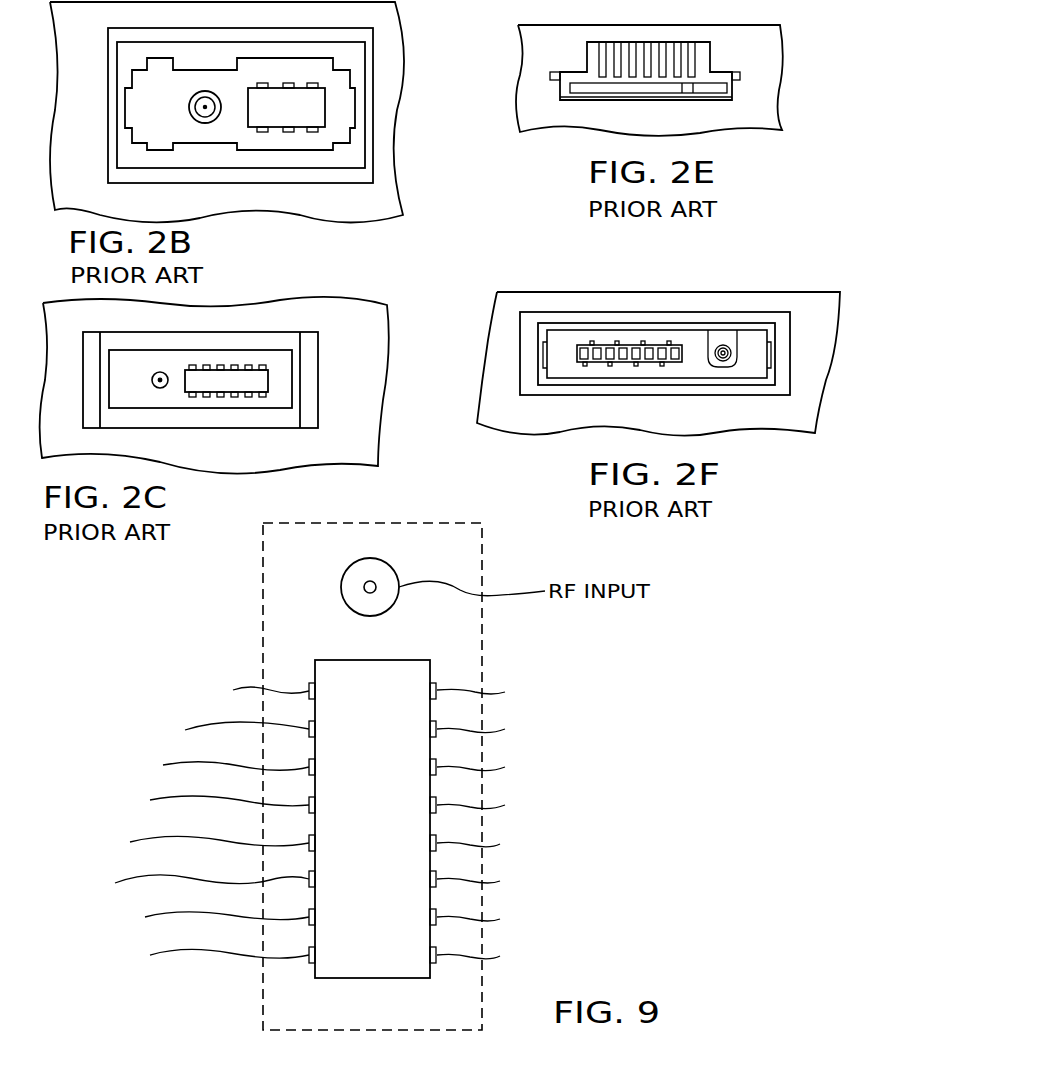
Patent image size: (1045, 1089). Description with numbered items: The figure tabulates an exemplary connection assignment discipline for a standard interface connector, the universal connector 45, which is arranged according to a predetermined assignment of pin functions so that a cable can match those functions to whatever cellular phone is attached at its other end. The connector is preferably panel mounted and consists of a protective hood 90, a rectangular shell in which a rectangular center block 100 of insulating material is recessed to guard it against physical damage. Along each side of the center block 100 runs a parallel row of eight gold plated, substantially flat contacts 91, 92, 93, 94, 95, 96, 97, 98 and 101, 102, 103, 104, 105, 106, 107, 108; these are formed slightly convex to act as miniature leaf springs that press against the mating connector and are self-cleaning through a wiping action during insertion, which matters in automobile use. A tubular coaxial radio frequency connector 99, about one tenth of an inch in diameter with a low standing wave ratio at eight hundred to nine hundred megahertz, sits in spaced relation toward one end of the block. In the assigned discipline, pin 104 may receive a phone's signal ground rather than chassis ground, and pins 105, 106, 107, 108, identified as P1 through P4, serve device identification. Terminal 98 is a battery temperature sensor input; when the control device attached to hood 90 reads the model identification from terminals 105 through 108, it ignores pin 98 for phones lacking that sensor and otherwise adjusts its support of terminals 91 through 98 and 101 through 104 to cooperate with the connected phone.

The universal connector 45 is at (252, 1028).
The protective hood 90 is at (288, 601).
The contact pin 91 is at (316, 690).
The contact pin 92 is at (316, 729).
The contact pin 93 is at (316, 767).
The contact pin 94 is at (316, 805).
The contact pin 95 is at (316, 843).
The contact pin 96 is at (316, 879).
The contact pin 97 is at (316, 917).
The battery temperature sensor input terminal 98 is at (316, 955).
The coaxial radio frequency connector 99 is at (395, 566).
The center block 100 is at (345, 660).
The contact pin 101 is at (425, 684).
The contact pin 102 is at (680, 728).
The contact pin 103 is at (790, 774).
The contact pin 104 is at (706, 812).
The contact pin P1 105 is at (527, 843).
The contact pin P2 106 is at (530, 884).
The contact pin P3 107 is at (530, 918).
The contact pin P4 108 is at (430, 957).